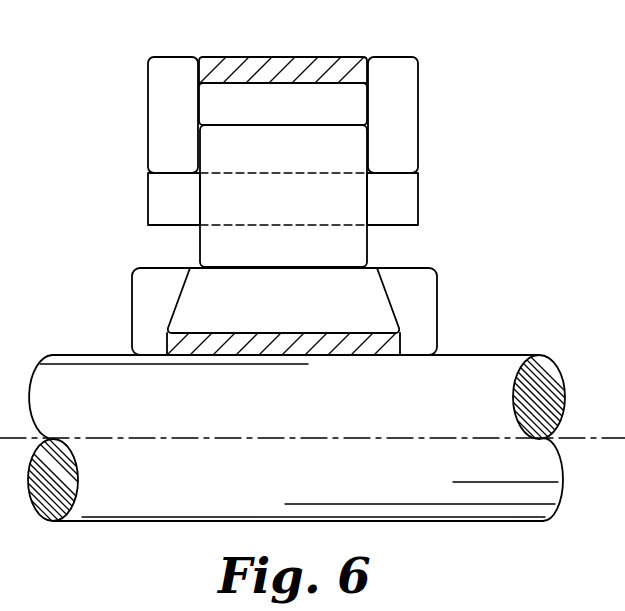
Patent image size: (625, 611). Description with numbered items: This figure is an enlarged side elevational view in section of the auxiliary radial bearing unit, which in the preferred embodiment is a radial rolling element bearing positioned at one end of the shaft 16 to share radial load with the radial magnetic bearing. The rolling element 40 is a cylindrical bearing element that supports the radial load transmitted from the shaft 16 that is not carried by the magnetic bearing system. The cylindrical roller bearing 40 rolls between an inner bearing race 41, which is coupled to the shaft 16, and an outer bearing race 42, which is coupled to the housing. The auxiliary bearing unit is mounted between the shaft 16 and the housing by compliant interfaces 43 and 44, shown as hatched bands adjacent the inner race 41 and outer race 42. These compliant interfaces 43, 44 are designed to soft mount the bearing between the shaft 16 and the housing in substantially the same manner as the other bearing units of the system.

The shaft 16 is at (500, 365).
The rolling element 40 is at (355, 255).
The inner bearing race 41 is at (382, 317).
The outer bearing race 42 is at (358, 108).
The compliant interface 43 is at (383, 342).
The compliant interface 44 is at (311, 57).